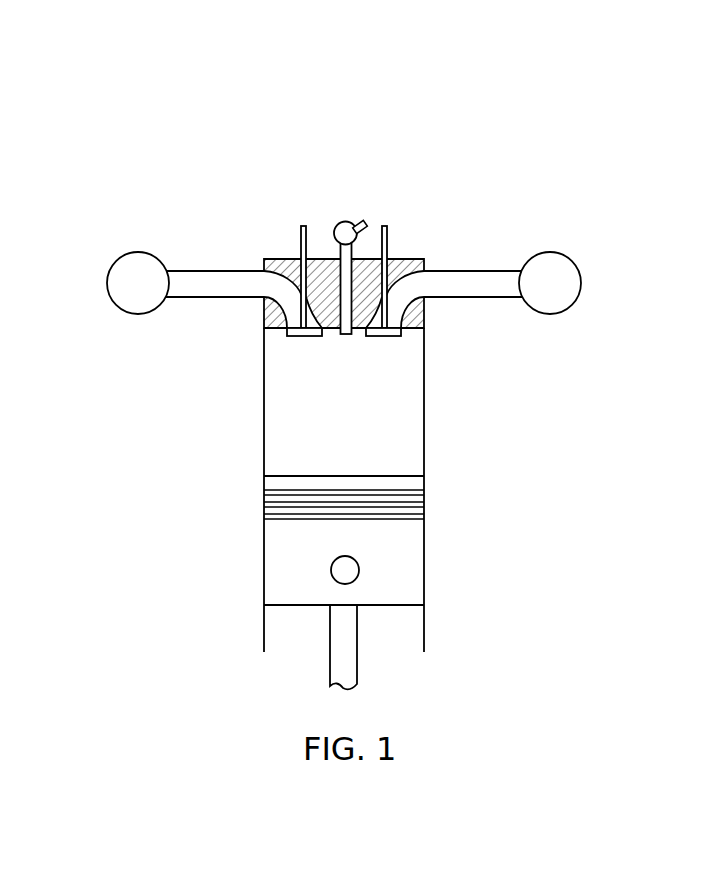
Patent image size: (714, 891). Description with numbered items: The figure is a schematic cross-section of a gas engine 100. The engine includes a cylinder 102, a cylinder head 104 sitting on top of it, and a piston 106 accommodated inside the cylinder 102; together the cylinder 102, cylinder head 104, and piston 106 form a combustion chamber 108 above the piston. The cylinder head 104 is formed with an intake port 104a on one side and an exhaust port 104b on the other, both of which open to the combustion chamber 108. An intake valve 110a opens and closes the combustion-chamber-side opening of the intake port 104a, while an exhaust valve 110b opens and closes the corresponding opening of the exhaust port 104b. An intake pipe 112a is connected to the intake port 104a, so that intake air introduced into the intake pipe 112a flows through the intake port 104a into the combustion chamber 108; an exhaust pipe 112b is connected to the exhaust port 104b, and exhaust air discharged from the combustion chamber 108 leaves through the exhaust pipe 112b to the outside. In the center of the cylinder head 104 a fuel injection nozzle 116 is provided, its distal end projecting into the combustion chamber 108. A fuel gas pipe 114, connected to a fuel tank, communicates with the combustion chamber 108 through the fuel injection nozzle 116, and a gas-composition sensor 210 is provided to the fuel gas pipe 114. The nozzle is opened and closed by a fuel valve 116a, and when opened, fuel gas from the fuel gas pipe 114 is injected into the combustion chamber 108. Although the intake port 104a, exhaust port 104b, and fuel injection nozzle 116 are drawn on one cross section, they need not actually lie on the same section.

The gas engine 100 is at (99, 73).
The cylinder 102 is at (266, 424).
The cylinder head 104 is at (407, 258).
The intake port 104a is at (283, 280).
The exhaust port 104b is at (404, 280).
The piston 106 is at (303, 473).
The combustion chamber 108 is at (365, 415).
The intake valve 110a is at (303, 338).
The exhaust valve 110b is at (383, 340).
The intake pipe 112a is at (130, 251).
The exhaust pipe 112b is at (559, 251).
The fuel gas pipe 114 is at (343, 220).
The fuel injection nozzle 116 is at (315, 313).
The fuel valve 116a is at (387, 233).
The gas-composition sensor 210 is at (366, 220).